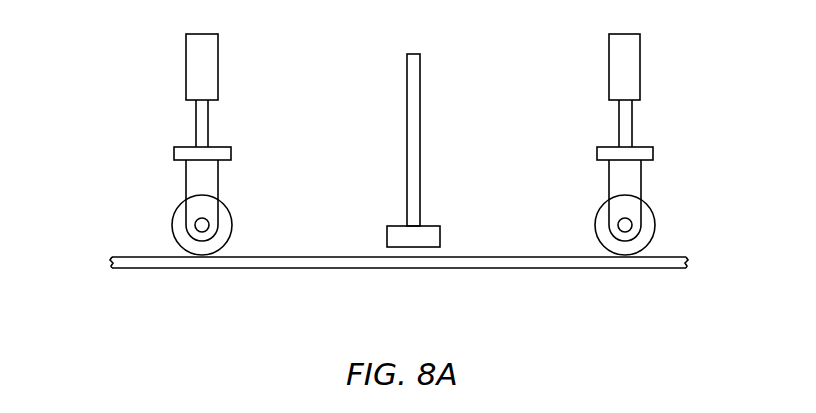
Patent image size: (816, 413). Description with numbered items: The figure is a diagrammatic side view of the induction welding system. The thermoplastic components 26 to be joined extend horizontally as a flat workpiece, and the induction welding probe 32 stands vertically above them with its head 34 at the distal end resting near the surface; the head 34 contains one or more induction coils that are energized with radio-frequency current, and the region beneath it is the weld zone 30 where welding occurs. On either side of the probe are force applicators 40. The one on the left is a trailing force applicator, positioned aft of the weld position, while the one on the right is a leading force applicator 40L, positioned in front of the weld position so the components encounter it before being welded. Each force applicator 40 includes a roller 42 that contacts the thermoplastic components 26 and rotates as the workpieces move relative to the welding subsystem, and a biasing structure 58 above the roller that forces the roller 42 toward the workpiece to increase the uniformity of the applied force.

The thermoplastic components 26 is at (631, 259).
The weld zone 30 is at (444, 194).
The induction welding probe 32 is at (427, 157).
The head 34 is at (441, 237).
The force applicator 40 is at (158, 144).
The leading force applicator 40L is at (670, 143).
The roller 42 is at (165, 207).
The biasing structure 58 is at (207, 59).